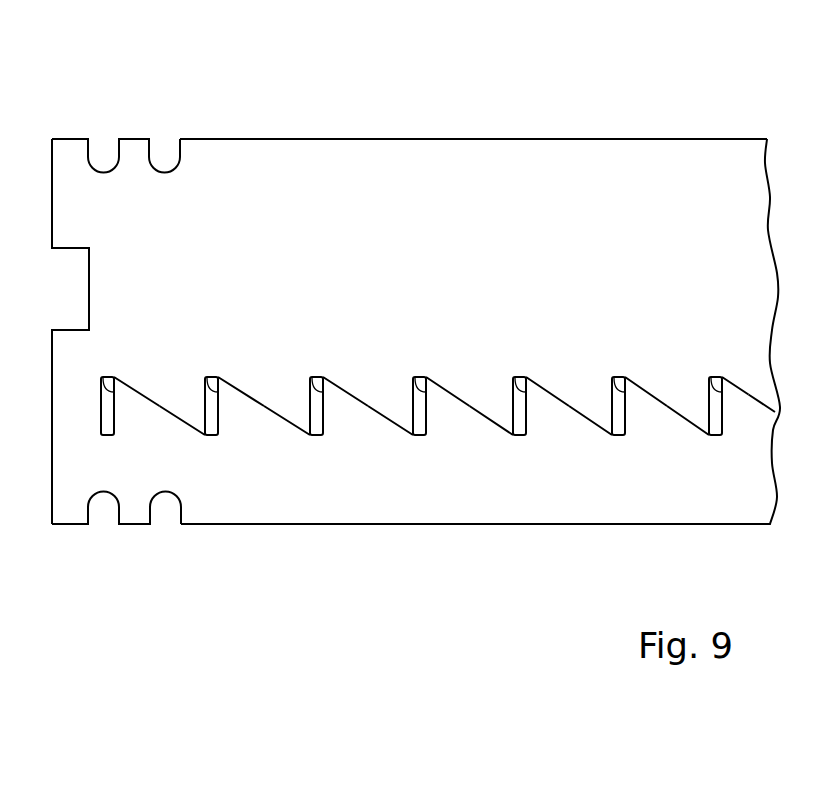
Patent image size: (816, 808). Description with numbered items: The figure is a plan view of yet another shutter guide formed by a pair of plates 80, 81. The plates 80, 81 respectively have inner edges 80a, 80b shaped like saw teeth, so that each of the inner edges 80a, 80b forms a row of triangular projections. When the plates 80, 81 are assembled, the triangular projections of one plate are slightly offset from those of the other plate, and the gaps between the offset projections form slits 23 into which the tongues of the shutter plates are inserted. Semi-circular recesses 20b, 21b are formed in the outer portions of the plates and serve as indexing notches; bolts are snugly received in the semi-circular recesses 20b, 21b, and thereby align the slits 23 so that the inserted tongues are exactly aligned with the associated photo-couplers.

The plate 80 is at (472, 524).
The plate 81 is at (522, 139).
The semi-circular recess 21b is at (157, 147).
The semi-circular recess 20b is at (92, 505).
The slit 23 is at (107, 377).
The inner edge 80a is at (150, 400).
The inner edge 80b is at (167, 411).